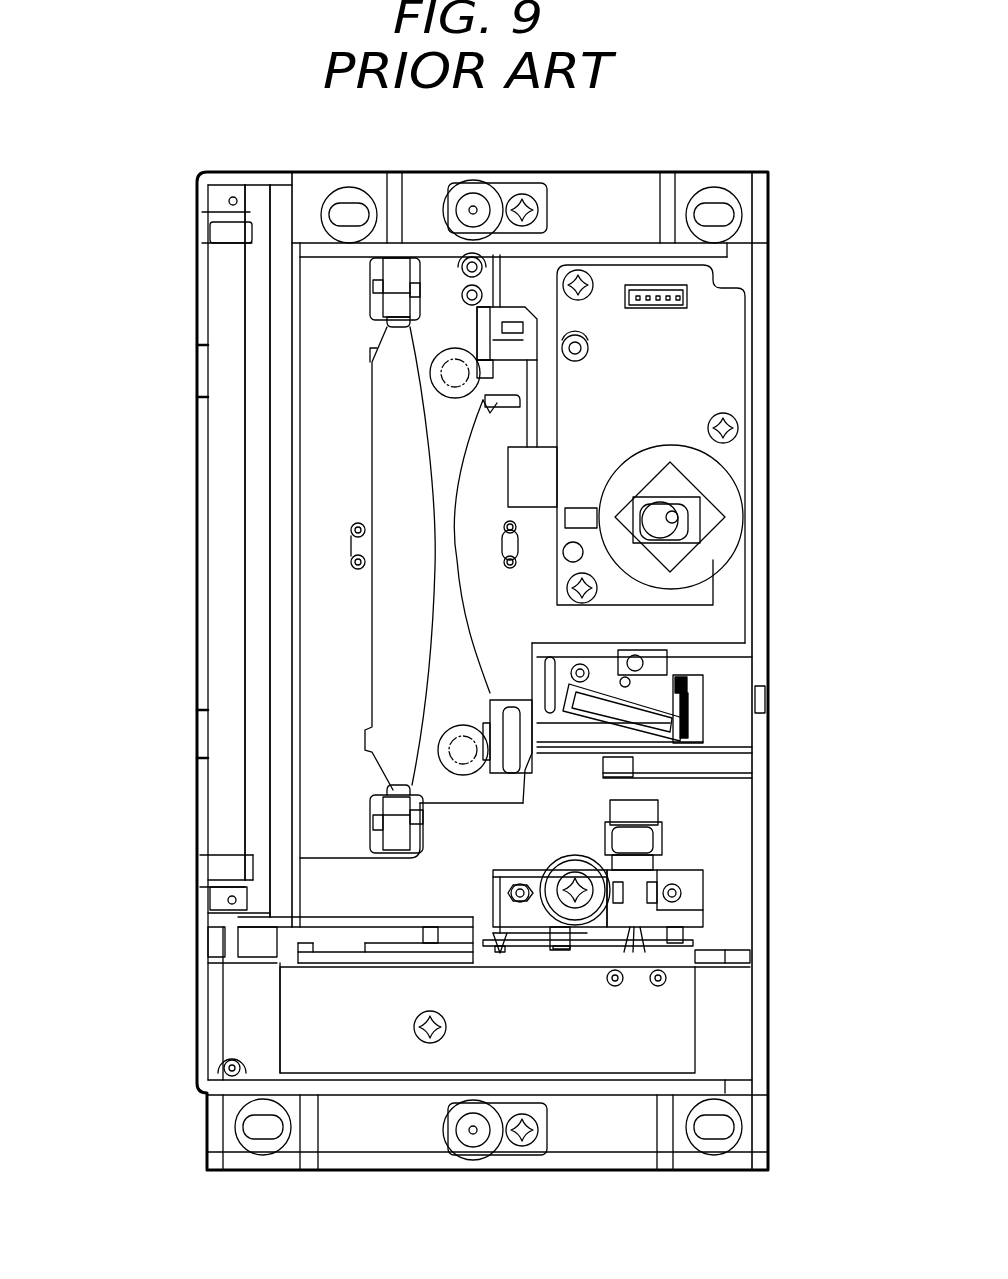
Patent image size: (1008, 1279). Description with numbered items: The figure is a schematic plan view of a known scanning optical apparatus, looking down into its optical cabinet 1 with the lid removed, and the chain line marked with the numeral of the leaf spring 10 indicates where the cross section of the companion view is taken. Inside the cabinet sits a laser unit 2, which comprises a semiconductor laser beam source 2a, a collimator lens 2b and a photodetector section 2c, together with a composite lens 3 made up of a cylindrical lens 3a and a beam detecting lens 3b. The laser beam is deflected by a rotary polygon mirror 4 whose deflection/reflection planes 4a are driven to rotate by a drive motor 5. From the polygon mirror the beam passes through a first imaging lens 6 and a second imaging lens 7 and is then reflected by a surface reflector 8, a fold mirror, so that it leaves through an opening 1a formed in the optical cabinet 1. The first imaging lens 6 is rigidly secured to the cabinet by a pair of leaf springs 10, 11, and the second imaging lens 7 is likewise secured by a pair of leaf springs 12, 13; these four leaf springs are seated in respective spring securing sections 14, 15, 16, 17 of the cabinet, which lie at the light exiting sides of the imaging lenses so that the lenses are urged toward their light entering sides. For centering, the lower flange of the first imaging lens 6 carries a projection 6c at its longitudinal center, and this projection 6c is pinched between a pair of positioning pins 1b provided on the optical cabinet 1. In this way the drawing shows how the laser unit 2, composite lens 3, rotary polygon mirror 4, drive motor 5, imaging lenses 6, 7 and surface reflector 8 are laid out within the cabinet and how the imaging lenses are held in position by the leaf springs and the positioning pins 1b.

The optical cabinet 1 is at (646, 195).
The opening 1a is at (258, 675).
The positioning pins 1b is at (513, 515).
The laser unit 2 is at (703, 903).
The semiconductor laser beam source 2a is at (635, 900).
The collimator lens 2b is at (638, 810).
The photodetector section 2c is at (548, 946).
The composite lens 3 is at (650, 668).
The cylindrical lens 3a is at (687, 722).
The beam detecting lens 3b is at (595, 703).
The rotary polygon mirror 4 is at (673, 477).
The deflection/reflection planes 4a is at (712, 520).
The drive motor 5 is at (728, 347).
The first imaging lens 6 is at (522, 408).
The projection 6c is at (518, 568).
The second imaging lens 7 is at (390, 397).
The surface reflector 8 is at (256, 432).
The leaf spring 10 is at (188, 518).
The leaf spring 11 is at (490, 717).
The leaf spring 12 is at (393, 277).
The leaf spring 13 is at (397, 784).
The spring securing section 14 is at (483, 340).
The spring securing section 15 is at (477, 787).
The spring securing section 16 is at (374, 300).
The spring securing section 17 is at (373, 838).